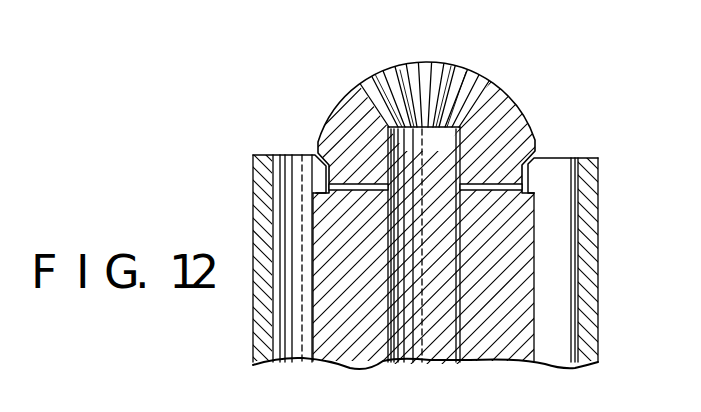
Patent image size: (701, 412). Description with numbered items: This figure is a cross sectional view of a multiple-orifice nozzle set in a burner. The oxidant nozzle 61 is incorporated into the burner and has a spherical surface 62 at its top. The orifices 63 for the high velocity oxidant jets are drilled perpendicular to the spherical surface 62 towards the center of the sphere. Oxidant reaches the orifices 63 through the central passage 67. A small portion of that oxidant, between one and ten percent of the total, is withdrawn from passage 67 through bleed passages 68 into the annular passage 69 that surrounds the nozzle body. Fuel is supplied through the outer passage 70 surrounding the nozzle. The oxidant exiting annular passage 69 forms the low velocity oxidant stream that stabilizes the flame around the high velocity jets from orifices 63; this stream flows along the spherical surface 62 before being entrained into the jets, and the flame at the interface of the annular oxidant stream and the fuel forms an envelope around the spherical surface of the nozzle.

The oxidant nozzle 61 is at (540, 190).
The spherical surface 62 is at (512, 108).
The orifices 63 is at (484, 97).
The passage 67 is at (448, 302).
The bleed passages 68 is at (350, 196).
The annular passage 69 is at (328, 178).
The passage 70 is at (560, 323).